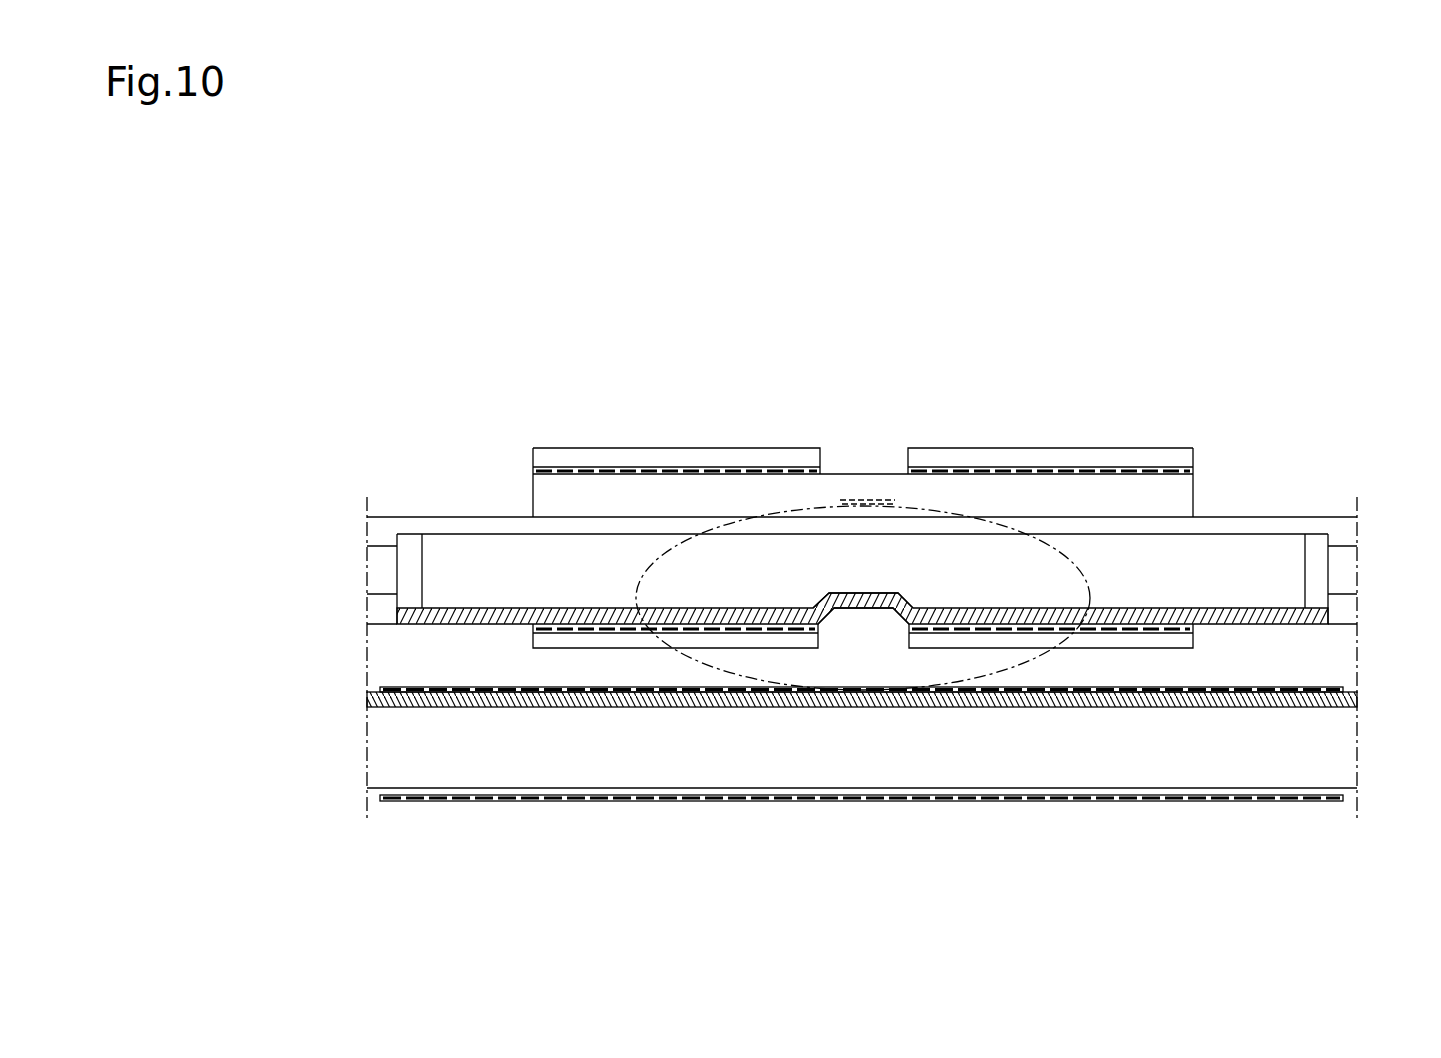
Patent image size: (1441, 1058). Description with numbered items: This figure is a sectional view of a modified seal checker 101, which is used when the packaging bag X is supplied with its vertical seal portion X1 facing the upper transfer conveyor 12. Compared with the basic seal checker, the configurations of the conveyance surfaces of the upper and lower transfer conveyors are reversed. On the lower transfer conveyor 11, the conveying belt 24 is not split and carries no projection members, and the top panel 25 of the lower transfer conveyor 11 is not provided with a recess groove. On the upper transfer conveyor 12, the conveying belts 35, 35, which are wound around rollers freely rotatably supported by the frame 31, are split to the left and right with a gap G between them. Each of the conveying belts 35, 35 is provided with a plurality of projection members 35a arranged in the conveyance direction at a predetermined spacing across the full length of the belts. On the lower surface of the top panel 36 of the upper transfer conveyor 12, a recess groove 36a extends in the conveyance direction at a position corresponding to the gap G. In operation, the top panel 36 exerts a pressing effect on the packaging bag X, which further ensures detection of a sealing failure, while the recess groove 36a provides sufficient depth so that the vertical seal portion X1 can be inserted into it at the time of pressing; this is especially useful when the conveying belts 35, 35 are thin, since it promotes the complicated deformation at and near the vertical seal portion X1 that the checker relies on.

The seal checker 101 is at (1351, 466).
The lower transfer conveyor 11 is at (1255, 842).
The upper transfer conveyor 12 is at (1255, 494).
The conveying belt 24 is at (1157, 803).
The top panel 25 is at (1218, 708).
The frame 31 is at (484, 513).
The conveying belts 35 is at (532, 630).
The projection members 35a is at (593, 460).
The top panel 36 is at (1238, 607).
The recess groove 36a is at (847, 610).
The gap G is at (891, 646).
The packaging bag X is at (636, 586).
The vertical seal portion X1 is at (862, 497).